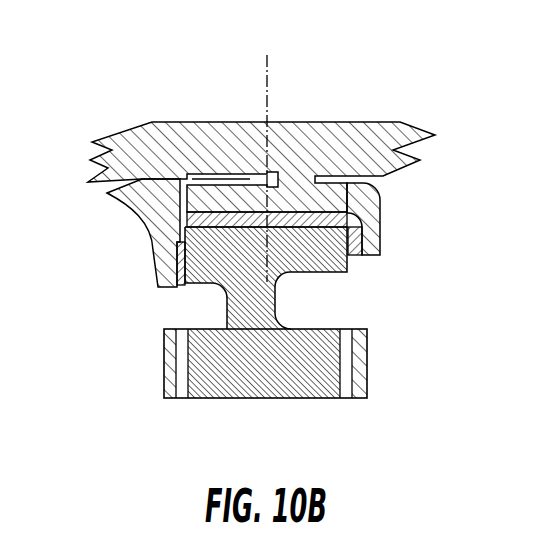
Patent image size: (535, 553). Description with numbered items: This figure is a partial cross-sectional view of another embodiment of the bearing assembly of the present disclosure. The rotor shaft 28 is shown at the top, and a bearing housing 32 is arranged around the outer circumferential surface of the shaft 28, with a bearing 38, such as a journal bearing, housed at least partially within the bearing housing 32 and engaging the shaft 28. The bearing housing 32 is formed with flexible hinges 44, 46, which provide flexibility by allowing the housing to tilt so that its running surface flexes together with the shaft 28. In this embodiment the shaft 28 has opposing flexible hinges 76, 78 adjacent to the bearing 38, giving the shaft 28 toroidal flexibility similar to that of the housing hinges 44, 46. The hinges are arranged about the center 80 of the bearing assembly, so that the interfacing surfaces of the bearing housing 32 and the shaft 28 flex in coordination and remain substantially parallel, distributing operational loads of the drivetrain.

The rotor shaft 28 is at (125, 124).
The bearing housing 32 is at (214, 404).
The bearing 38 is at (160, 243).
The flexible hinge 44 is at (298, 292).
The flexible hinge 46 is at (208, 302).
The flexible hinge 76 is at (323, 180).
The flexible hinge 78 is at (113, 193).
The center of the bearing assembly 80 is at (268, 92).